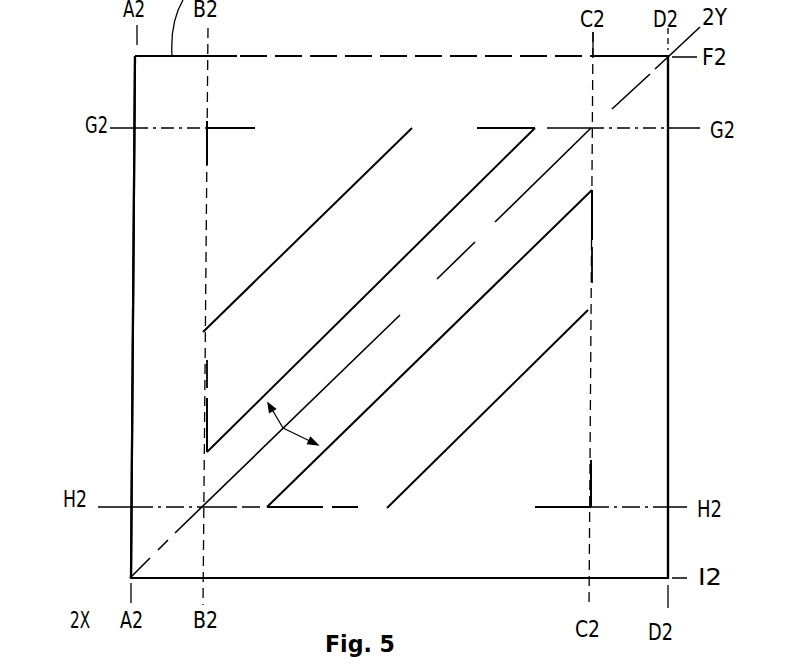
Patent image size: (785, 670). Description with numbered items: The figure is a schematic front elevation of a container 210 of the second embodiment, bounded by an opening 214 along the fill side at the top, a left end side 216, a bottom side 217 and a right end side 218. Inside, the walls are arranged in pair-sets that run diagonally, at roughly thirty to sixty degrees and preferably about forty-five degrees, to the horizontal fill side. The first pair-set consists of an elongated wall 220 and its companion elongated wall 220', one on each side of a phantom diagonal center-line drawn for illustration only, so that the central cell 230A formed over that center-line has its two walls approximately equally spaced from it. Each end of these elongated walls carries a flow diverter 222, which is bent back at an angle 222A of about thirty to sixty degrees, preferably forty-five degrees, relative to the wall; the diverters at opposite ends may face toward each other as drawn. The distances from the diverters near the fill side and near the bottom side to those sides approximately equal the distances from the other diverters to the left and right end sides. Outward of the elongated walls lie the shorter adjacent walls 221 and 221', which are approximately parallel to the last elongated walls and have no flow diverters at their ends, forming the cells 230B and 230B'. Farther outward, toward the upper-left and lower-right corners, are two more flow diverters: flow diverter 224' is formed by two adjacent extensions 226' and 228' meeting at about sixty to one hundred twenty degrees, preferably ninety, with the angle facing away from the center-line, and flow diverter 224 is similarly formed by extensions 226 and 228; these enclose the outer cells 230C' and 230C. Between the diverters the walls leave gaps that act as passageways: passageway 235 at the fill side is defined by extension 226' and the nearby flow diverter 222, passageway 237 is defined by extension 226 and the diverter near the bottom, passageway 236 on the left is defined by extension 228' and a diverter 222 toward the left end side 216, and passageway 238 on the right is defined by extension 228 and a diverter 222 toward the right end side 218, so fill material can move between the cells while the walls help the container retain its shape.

The container 210 is at (124, 58).
The opening 214 is at (455, 56).
The left end side 216 is at (134, 259).
The bottom side 217 is at (399, 598).
The right end side 218 is at (669, 374).
The elongated wall pair-set 220 is at (429, 343).
The elongated wall 220' is at (371, 290).
The adjacent wall 221 is at (493, 409).
The adjacent wall 221' is at (307, 222).
The flow diverter 222 is at (207, 418).
The flow diverter angle 222A is at (261, 394).
The flow diverter 224 is at (609, 527).
The flow diverter 224' is at (182, 108).
The flow diverter extension 226 is at (551, 526).
The flow diverter extension 226' is at (247, 110).
The flow diverter extension 228 is at (614, 473).
The flow diverter extension 228' is at (184, 159).
The cell 230A is at (430, 310).
The cell 230B is at (481, 365).
The cell 230B' is at (344, 250).
The cell 230C is at (518, 447).
The cell 230C' is at (267, 180).
The passageway 235 is at (455, 98).
The passageway 236 is at (193, 277).
The passageway 237 is at (395, 558).
The passageway 238 is at (645, 325).